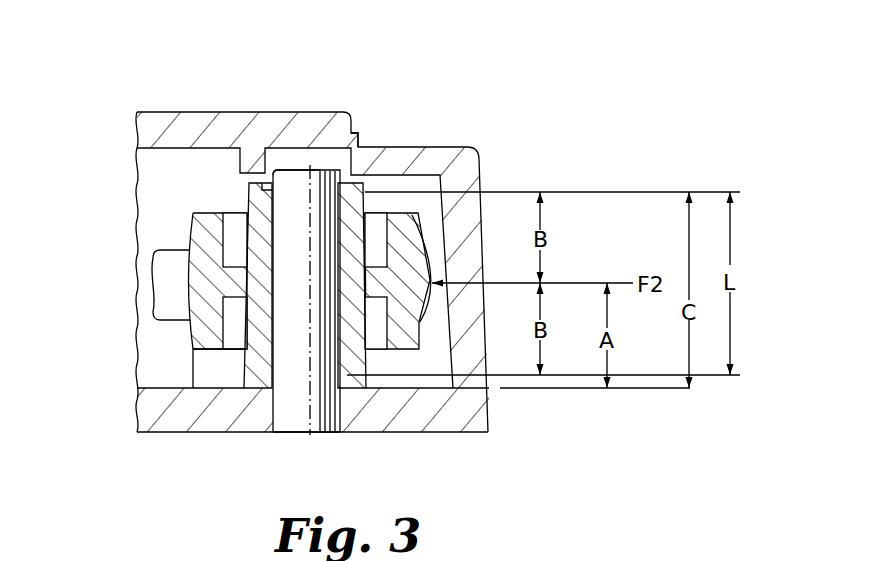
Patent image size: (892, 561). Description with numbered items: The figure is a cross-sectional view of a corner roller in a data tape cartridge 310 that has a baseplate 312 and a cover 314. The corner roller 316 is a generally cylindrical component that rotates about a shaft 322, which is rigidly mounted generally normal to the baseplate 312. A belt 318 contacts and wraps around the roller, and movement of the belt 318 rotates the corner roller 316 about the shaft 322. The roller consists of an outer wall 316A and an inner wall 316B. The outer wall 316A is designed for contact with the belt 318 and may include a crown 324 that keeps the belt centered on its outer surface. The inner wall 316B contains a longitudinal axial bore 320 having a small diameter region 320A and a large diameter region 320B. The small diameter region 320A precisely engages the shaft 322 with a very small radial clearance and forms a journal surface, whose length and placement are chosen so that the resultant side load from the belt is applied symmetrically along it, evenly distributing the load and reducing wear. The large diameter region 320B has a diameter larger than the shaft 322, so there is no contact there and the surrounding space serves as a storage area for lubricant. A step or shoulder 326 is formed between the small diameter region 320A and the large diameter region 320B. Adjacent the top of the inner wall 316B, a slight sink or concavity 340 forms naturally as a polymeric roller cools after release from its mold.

The data tape cartridge 310 is at (313, 266).
The baseplate 312 is at (166, 418).
The cover 314 is at (388, 157).
The corner roller 316 is at (241, 219).
The outer wall 316A is at (214, 331).
The inner wall 316B is at (250, 205).
The belt 318 is at (168, 308).
The axial bore 320 is at (296, 277).
The small diameter region 320A is at (272, 203).
The large diameter region 320B is at (272, 377).
The shaft 322 is at (301, 433).
The crown 324 is at (187, 280).
The step or shoulder 326 is at (340, 378).
The sink or concavity 340 is at (352, 135).